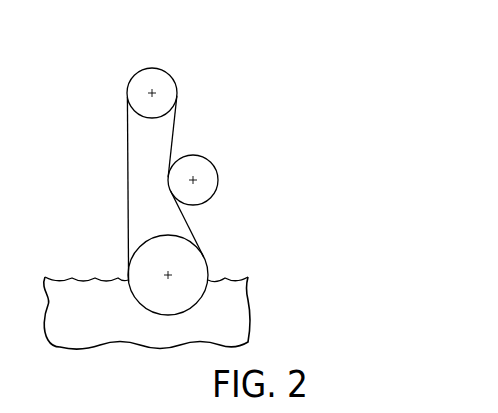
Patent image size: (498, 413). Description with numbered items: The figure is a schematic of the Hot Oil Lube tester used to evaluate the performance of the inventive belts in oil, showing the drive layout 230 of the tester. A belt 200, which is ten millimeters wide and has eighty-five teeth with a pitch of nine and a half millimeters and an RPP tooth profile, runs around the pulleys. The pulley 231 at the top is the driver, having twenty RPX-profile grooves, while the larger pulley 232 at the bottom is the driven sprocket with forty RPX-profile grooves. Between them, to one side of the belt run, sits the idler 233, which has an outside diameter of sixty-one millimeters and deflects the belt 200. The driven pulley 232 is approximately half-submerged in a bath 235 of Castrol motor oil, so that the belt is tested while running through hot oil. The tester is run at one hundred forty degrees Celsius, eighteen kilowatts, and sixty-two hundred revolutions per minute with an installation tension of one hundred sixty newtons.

The belt 200 is at (125, 169).
The drive layout 230 is at (256, 98).
The pulley 231 is at (165, 77).
The pulley 232 is at (187, 248).
The idler 233 is at (200, 165).
The bath 235 is at (232, 288).